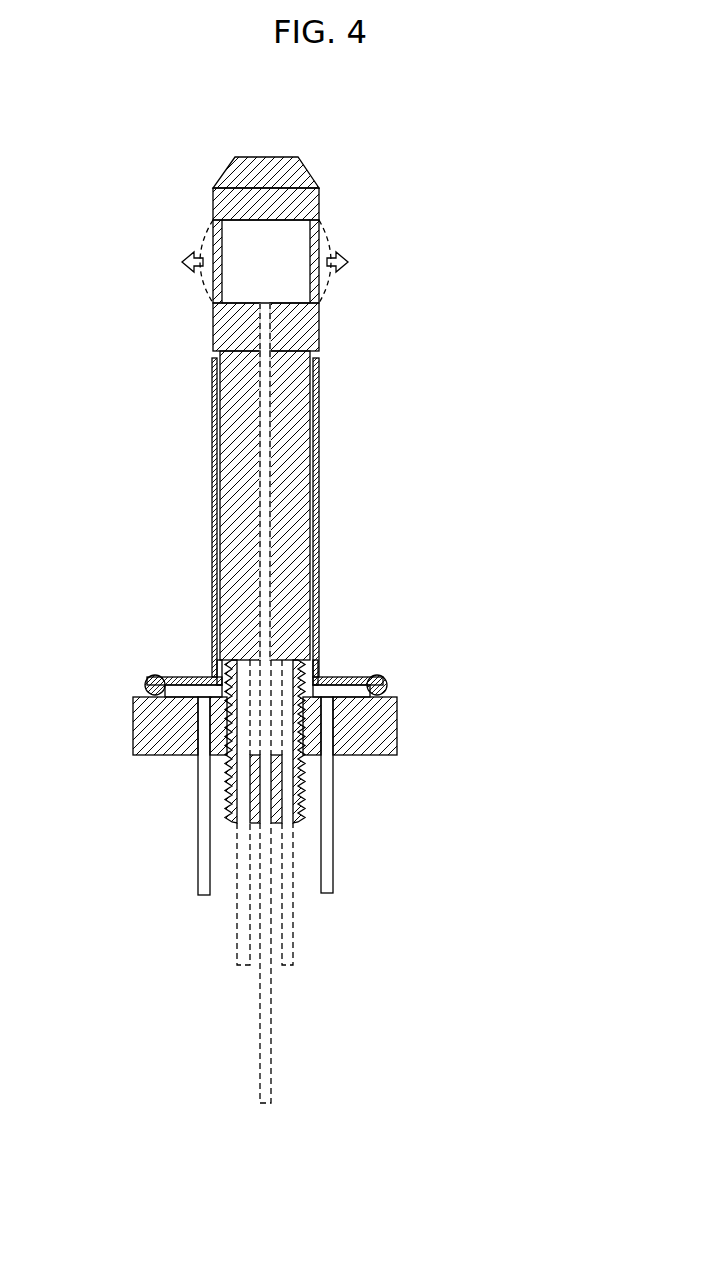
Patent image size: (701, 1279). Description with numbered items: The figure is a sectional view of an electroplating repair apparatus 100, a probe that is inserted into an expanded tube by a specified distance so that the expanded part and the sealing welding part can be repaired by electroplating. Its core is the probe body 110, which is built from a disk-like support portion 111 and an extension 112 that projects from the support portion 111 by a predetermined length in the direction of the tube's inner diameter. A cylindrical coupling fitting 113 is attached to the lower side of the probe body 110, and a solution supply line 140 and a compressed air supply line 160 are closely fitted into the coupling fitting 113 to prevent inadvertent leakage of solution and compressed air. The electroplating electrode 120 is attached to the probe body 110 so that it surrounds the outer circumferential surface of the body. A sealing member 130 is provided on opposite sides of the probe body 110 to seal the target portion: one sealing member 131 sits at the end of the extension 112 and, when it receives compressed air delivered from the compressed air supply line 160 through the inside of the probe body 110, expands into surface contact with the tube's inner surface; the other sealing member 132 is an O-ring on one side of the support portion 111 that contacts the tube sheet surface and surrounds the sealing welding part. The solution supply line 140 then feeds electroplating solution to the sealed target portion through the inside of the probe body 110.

The electroplating repair apparatus 100 is at (285, 130).
The probe body 110 is at (556, 435).
The support portion 111 is at (140, 728).
The extension 112 is at (305, 418).
The coupling fitting 113 is at (305, 800).
The electroplating electrode 120 is at (215, 513).
The sealing member 130 is at (556, 648).
The sealing member 131 is at (319, 226).
The sealing member 132 is at (147, 676).
The solution supply line 140 is at (200, 870).
The compressed air supply line 160 is at (271, 995).